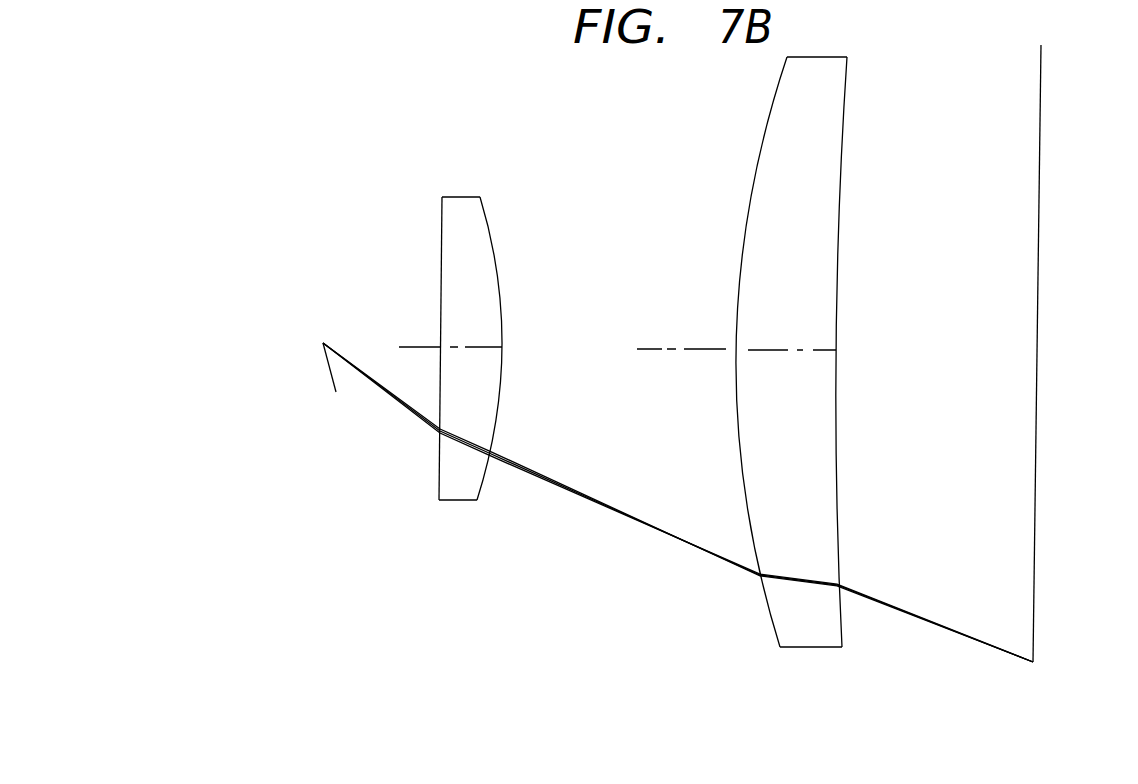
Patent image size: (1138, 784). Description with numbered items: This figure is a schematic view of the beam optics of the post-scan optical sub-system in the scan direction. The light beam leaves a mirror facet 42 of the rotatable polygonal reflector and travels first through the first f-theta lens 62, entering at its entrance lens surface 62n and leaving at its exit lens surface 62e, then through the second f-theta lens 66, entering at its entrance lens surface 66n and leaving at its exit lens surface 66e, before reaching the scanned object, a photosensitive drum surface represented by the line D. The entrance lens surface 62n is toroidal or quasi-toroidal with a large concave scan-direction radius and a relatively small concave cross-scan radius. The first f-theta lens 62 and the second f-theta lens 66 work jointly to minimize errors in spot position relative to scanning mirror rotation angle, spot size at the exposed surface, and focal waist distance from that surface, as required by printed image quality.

The mirror facet 42 is at (338, 386).
The first f-theta lens 62 is at (467, 348).
The entrance lens surface 62n is at (442, 285).
The exit lens surface 62e is at (502, 393).
The second f-theta lens 66 is at (788, 352).
The entrance lens surface 66n is at (750, 198).
The exit lens surface 66e is at (836, 437).
The line representing photosensitive drum surface D is at (1040, 298).